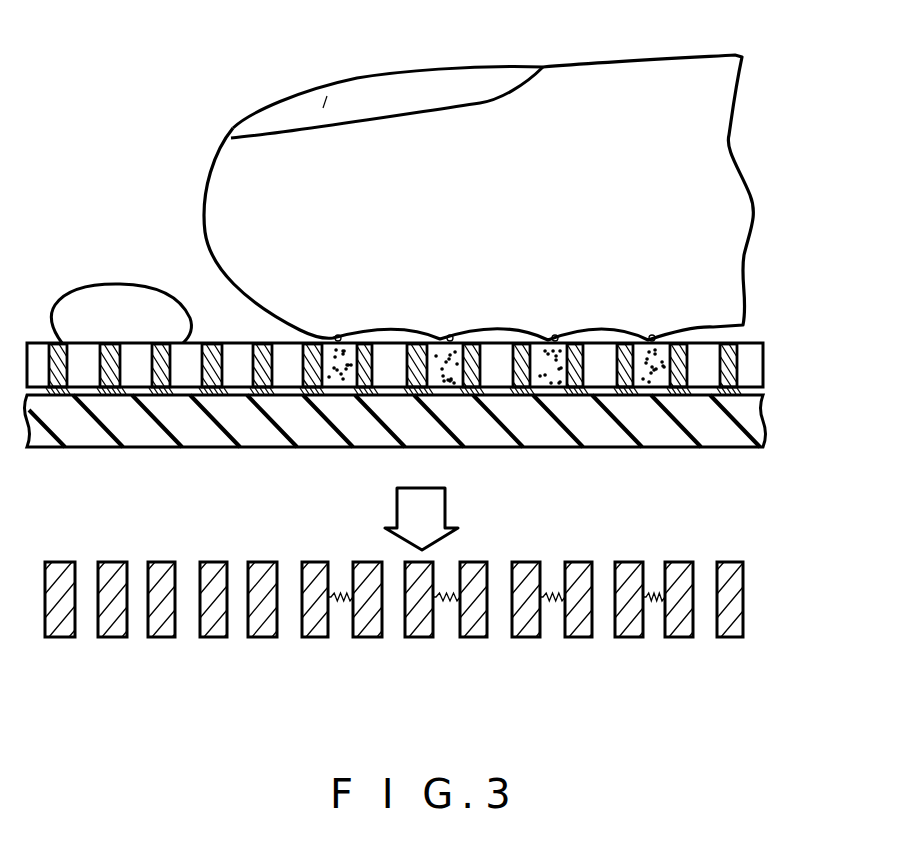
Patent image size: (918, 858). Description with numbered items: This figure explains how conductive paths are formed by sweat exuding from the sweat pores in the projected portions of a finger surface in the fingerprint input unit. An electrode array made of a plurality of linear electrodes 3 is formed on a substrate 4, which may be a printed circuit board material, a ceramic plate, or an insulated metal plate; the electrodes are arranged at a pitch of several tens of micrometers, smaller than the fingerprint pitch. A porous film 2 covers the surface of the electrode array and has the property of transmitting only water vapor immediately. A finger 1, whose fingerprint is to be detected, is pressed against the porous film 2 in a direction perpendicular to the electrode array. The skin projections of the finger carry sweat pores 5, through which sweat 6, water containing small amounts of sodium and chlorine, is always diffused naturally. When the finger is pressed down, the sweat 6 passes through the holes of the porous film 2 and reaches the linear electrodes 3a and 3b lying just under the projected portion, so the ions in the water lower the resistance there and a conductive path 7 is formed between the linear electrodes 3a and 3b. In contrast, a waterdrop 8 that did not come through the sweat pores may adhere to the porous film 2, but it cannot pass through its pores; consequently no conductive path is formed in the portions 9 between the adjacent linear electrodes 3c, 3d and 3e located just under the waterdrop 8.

The finger 1 is at (728, 135).
The porous film 2 is at (764, 353).
The linear electrodes 3 is at (724, 395).
The linear electrode 3a is at (317, 397).
The linear electrode 3b is at (362, 397).
The linear electrode 3c is at (58, 637).
The linear electrode 3d is at (113, 637).
The linear electrode 3e is at (167, 637).
The substrate 4 is at (764, 411).
The sweat pores 5 is at (336, 338).
The sweat 6 is at (331, 397).
The conductive path 7 is at (341, 603).
The waterdrop 8 is at (97, 285).
The portions between adjacent linear electrodes 9 is at (77, 562).